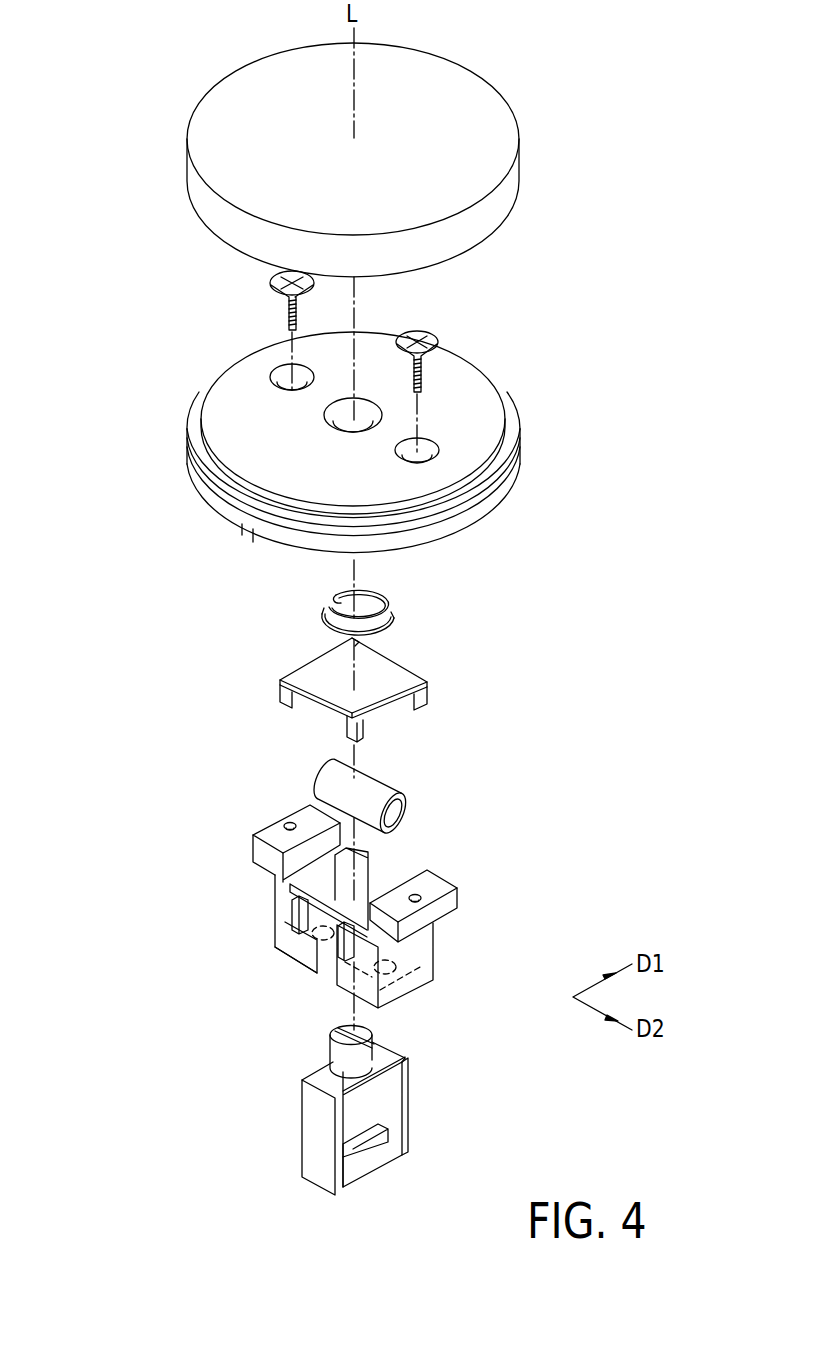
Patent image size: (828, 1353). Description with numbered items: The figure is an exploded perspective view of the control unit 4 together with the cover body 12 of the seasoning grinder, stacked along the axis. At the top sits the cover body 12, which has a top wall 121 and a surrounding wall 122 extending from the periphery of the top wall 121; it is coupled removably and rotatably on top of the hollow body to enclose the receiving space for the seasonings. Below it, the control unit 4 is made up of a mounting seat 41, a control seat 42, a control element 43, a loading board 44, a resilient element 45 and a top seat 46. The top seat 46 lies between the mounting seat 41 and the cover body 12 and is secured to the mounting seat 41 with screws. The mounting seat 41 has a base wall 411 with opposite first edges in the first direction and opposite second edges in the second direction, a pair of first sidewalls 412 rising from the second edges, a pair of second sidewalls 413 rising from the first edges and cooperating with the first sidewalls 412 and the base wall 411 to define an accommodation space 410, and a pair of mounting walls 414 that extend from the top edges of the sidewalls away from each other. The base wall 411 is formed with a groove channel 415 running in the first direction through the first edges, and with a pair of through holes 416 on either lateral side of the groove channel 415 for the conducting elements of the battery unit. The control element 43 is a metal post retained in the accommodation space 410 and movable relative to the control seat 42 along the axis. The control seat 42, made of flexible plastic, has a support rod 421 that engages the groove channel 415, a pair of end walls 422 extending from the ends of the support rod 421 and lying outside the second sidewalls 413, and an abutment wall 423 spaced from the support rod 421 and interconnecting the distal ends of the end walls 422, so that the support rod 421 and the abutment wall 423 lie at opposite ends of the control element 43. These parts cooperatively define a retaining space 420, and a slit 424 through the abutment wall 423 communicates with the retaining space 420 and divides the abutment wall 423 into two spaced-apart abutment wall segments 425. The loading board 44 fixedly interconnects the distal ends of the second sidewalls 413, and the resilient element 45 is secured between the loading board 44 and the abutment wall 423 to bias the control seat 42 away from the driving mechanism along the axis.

The cover body 12 is at (399, 158).
The top wall 121 is at (442, 107).
The surrounding wall 122 is at (477, 223).
The control unit 4 is at (135, 395).
The top seat 46 is at (186, 484).
The resilient element 45 is at (342, 593).
The loading board 44 is at (332, 670).
The control element 43 is at (345, 791).
The mounting seat 41 is at (215, 853).
The accommodation space 410 is at (345, 882).
The base wall 411 is at (290, 962).
The first sidewalls 412 is at (277, 892).
The second sidewalls 413 is at (282, 938).
The mounting walls 414 is at (278, 830).
The groove channel 415 is at (330, 973).
The through holes 416 is at (316, 916).
The control seat 42 is at (270, 1152).
The retaining space 420 is at (352, 1116).
The support rod 421 is at (357, 1165).
The end walls 422 is at (390, 1098).
The abutment wall 423 is at (390, 1022).
The slit 424 is at (393, 1058).
The abutment wall segments 425 is at (343, 1062).